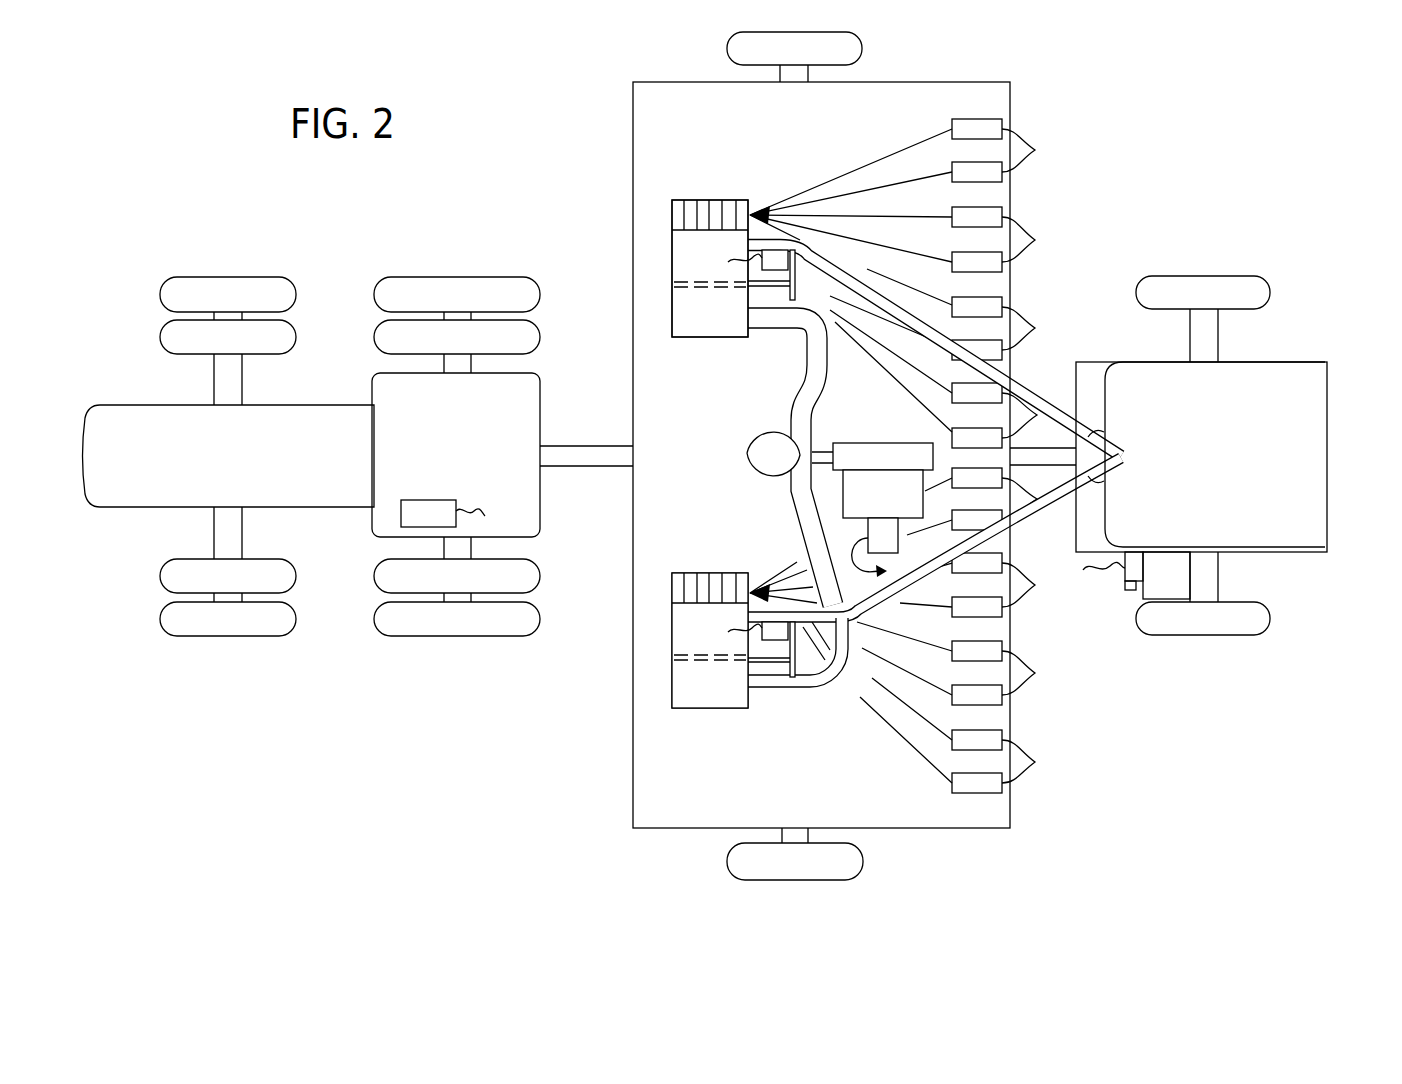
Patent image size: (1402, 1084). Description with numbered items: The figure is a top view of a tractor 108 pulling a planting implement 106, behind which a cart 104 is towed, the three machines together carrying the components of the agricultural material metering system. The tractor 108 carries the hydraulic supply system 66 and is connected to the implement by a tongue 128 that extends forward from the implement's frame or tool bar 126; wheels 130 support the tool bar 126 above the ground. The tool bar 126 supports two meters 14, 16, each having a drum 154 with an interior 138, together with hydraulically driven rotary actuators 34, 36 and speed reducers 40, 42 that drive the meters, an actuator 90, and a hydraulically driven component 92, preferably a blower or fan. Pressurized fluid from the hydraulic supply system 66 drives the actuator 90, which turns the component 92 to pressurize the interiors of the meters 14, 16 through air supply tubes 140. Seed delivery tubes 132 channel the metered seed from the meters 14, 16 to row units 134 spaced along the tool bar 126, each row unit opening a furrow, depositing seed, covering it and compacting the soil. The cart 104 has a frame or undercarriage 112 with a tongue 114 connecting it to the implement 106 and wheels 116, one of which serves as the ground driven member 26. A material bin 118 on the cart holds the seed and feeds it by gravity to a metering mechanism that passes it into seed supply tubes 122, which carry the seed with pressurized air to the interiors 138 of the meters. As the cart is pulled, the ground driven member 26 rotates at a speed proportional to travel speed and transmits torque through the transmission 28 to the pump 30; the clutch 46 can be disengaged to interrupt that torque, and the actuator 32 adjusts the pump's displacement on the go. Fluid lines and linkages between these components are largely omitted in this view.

The meter 14 is at (702, 342).
The meter 16 is at (701, 712).
The ground driven member 26 is at (1185, 636).
The transmission 28 is at (1172, 599).
The pump 30 is at (1119, 575).
The actuator 32 is at (1134, 590).
The hydraulically driven rotary actuator 34 is at (775, 255).
The hydraulically driven rotary actuator 36 is at (777, 641).
The speed reducer 40 is at (807, 340).
The speed reducer 42 is at (813, 678).
The clutch 46 is at (1170, 570).
The hydraulic supply system 66 is at (426, 500).
The actuator 90 is at (899, 547).
The hydraulically driven component 92 is at (870, 450).
The cart 104 is at (1214, 467).
The planting implement 106 is at (915, 78).
The tractor 108 is at (231, 276).
The undercarriage 112 is at (1083, 361).
The tongue 114 is at (1058, 447).
The wheels 116 is at (1215, 276).
The material bin 118 is at (1312, 361).
The seed supply tubes 122 is at (1124, 457).
The tool bar 126 is at (977, 82).
The tongue 128 is at (600, 446).
The wheels 130 is at (795, 32).
The seed delivery tubes 132 is at (900, 217).
The row units 134 is at (1035, 150).
The interior 138 is at (693, 256).
The air supply tube 140 is at (748, 453).
The drum 154 is at (690, 307).